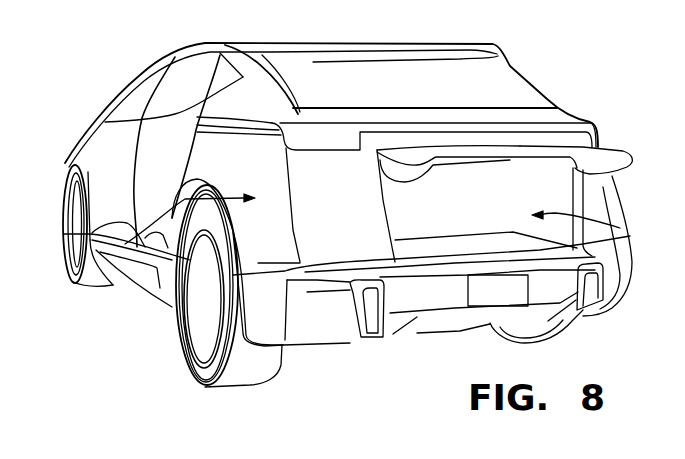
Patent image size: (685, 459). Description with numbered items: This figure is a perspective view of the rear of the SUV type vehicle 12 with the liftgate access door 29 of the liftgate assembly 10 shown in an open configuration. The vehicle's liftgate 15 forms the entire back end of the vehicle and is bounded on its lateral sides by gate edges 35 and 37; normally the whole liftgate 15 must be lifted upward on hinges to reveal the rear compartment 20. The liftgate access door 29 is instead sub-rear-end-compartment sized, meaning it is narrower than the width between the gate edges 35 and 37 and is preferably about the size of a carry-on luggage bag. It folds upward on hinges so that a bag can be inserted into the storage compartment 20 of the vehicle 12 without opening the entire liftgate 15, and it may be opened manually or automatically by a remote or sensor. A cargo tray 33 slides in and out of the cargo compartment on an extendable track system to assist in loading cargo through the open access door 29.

The liftgate assembly 10 is at (64, 234).
The SUV type vehicle 12 is at (148, 169).
The liftgate 15 is at (543, 90).
The rear compartment 20 is at (632, 233).
The liftgate access door 29 is at (618, 150).
The cargo tray 33 is at (435, 245).
The gate edge 35 is at (296, 222).
The gate edge 37 is at (623, 213).